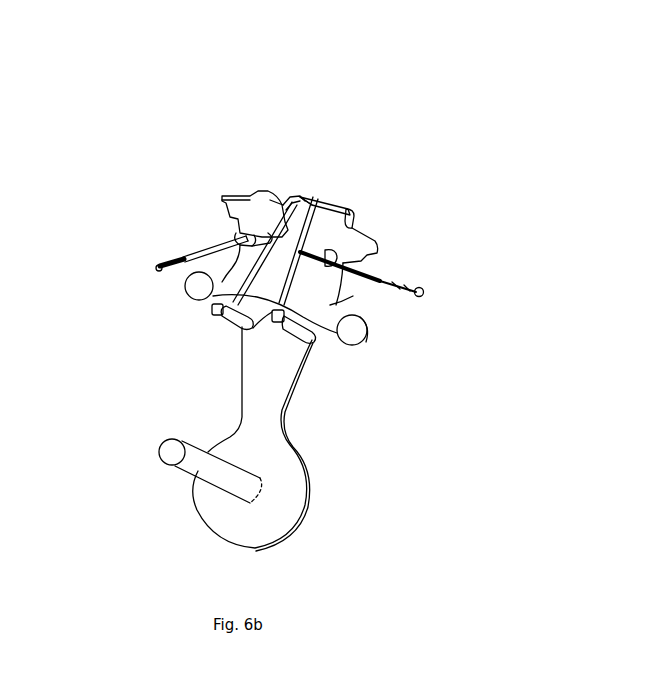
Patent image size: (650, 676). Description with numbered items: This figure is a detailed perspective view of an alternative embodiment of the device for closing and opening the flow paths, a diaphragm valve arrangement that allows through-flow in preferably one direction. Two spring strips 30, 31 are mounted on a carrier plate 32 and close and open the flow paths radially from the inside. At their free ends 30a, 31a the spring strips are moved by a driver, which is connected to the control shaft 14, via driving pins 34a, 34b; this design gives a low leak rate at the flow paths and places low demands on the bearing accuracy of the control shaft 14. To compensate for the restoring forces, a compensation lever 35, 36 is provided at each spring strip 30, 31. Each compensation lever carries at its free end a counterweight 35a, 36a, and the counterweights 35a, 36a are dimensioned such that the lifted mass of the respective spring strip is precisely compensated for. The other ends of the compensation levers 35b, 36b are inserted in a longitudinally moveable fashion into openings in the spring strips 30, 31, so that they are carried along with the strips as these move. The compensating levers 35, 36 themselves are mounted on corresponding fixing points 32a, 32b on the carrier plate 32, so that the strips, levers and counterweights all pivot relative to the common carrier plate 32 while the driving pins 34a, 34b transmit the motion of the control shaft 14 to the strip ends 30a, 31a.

The control shaft 14 is at (168, 452).
The spring strip 30 is at (259, 195).
The free end of spring strip 30a is at (226, 302).
The spring strip 31 is at (334, 202).
The free end of spring strip 31a is at (312, 325).
The carrier plate 32 is at (365, 322).
The fixing point 32a is at (238, 240).
The fixing point 32b is at (377, 240).
The driving pin 34a is at (216, 308).
The driving pin 34b is at (318, 343).
The compensation lever 35 is at (212, 258).
The counterweight 35a is at (162, 267).
The end of compensation lever 35b is at (287, 194).
The compensation lever 36 is at (372, 272).
The counterweight 36a is at (423, 293).
The end of compensation lever 36b is at (353, 212).